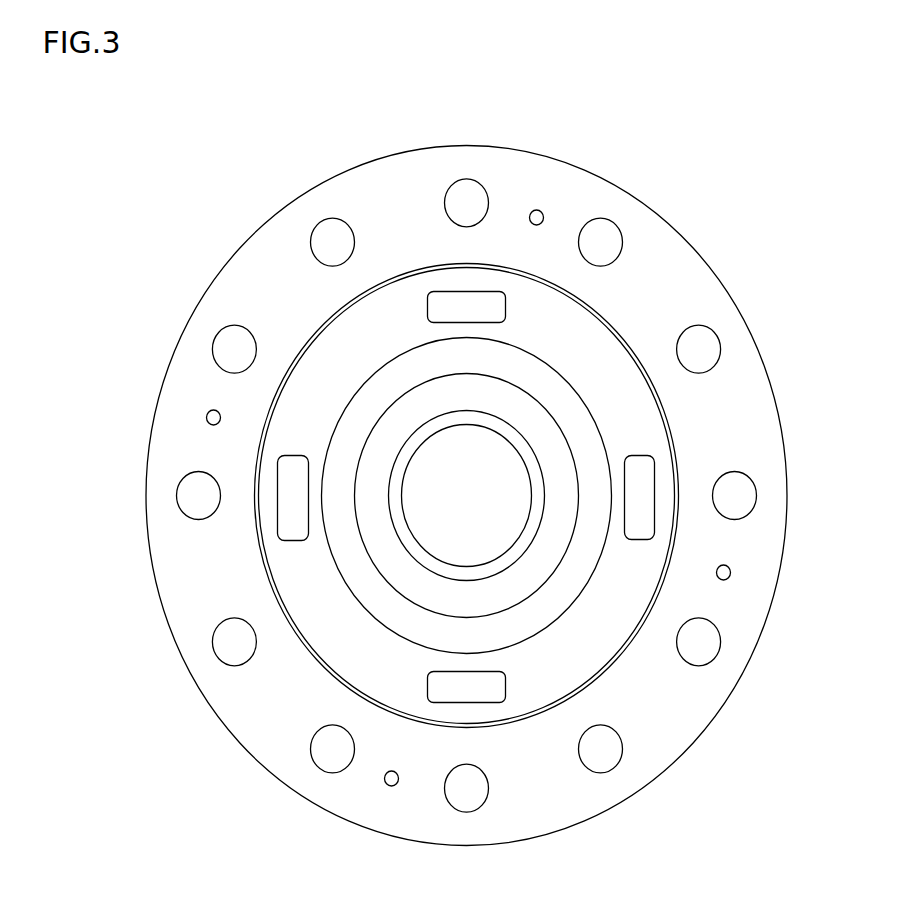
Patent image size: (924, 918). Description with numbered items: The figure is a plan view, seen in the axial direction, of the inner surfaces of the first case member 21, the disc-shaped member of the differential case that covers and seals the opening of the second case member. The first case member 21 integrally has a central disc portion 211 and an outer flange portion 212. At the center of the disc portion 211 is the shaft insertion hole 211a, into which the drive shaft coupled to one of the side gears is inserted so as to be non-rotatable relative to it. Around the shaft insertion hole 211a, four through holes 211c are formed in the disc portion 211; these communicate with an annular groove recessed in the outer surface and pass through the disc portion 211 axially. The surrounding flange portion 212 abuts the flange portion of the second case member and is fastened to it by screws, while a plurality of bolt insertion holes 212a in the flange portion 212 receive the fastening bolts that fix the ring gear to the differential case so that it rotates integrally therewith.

The first case member 21 is at (653, 187).
The disc portion 211 is at (333, 347).
The shaft insertion hole 211a is at (495, 437).
The through holes 211c is at (440, 302).
The flange portion 212 is at (668, 277).
The bolt insertion holes 212a is at (712, 343).